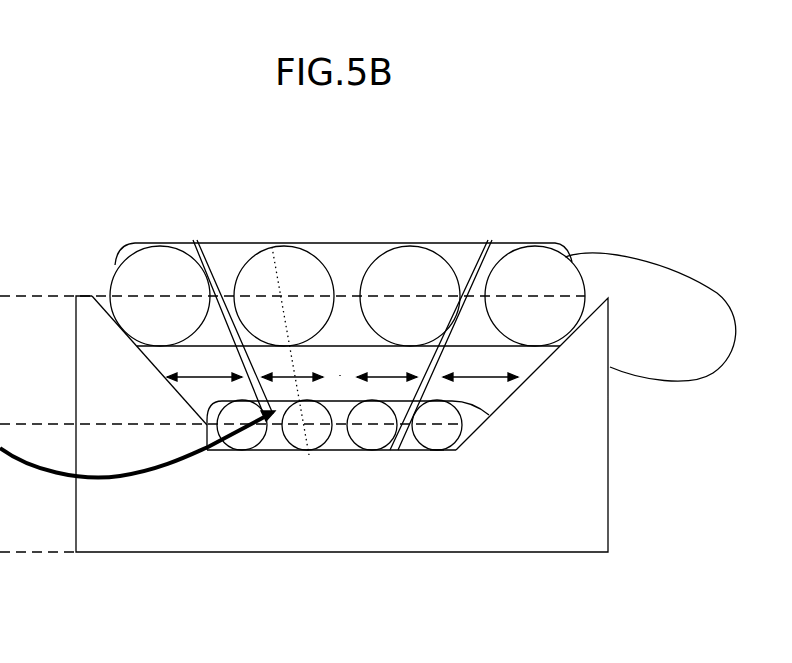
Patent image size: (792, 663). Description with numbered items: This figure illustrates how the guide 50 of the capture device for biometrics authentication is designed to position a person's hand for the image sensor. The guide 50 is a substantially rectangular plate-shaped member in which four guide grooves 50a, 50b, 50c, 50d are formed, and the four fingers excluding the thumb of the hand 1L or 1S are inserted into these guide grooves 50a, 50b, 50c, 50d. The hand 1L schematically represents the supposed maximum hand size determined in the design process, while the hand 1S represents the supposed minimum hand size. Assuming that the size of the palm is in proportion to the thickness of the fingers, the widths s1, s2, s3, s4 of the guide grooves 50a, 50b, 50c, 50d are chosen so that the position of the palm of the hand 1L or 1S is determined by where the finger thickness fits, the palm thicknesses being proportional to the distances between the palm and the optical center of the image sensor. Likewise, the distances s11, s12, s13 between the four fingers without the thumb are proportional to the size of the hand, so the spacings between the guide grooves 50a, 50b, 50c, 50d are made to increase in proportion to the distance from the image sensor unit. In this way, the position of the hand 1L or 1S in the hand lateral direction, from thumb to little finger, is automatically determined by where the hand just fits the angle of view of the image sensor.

The guide 50 is at (608, 510).
The guide groove 50a is at (207, 357).
The guide groove 50b is at (278, 357).
The guide groove 50c is at (367, 357).
The guide groove 50d is at (483, 357).
The width of guide groove s1 is at (206, 386).
The width of guide groove s2 is at (294, 386).
The width of guide groove s3 is at (388, 384).
The width of guide groove s4 is at (496, 384).
The distance between fingers s11 is at (194, 240).
The distance between fingers s12 is at (340, 375).
The distance between fingers s13 is at (490, 240).
The person's hand 1L is at (260, 235).
The person's hand 1S is at (437, 462).